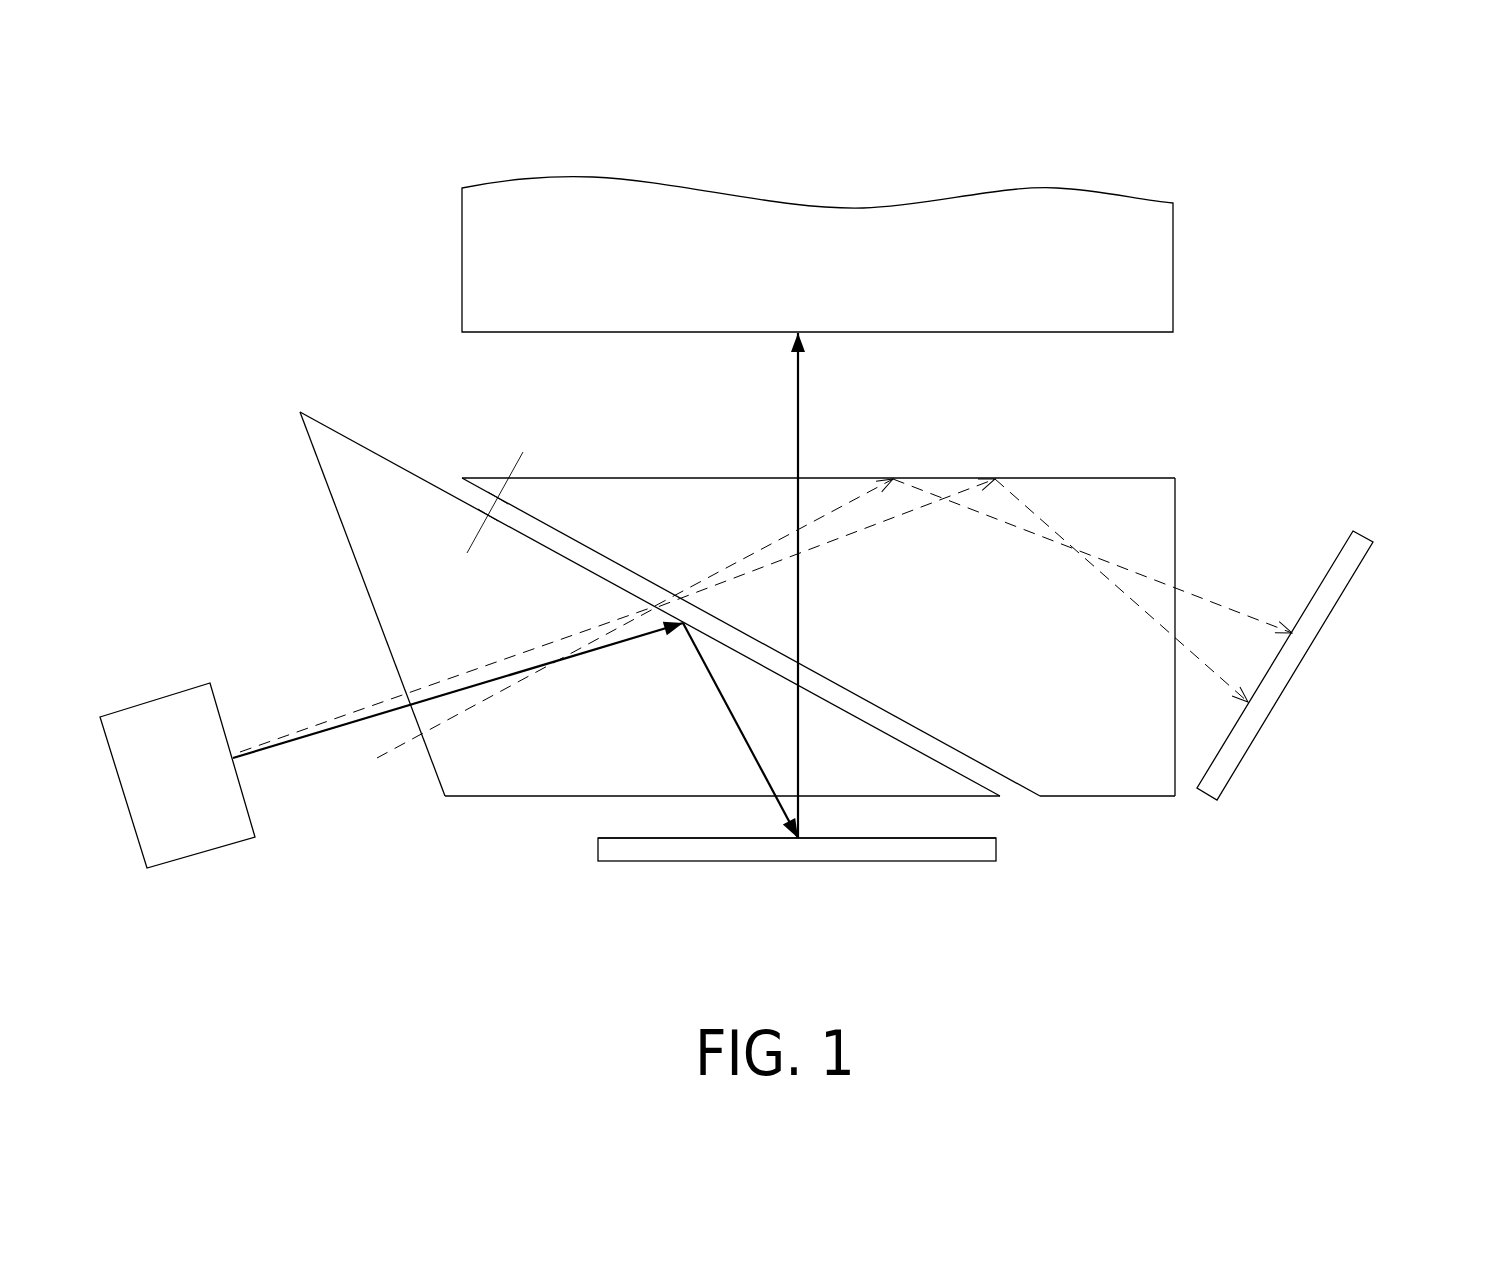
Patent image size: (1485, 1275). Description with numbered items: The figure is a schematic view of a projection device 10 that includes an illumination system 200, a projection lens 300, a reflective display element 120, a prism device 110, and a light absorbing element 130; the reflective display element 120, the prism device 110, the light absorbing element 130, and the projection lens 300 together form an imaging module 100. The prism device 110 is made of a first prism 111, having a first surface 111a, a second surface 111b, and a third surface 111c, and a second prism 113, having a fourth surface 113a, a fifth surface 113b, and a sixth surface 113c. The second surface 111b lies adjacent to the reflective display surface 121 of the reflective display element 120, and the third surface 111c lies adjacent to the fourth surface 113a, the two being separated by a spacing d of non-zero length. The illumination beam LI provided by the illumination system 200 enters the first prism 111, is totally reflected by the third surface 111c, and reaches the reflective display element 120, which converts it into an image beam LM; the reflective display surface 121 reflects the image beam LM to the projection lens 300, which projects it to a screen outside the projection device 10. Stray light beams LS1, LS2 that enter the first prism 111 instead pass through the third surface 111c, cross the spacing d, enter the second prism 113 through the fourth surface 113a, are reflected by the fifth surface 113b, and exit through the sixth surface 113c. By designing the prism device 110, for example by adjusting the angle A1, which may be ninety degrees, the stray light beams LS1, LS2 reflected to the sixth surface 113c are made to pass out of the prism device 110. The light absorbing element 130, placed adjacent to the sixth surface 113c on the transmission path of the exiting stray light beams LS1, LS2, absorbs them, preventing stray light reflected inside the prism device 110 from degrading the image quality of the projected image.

The projection device 10 is at (260, 268).
The imaging module 100 is at (804, 651).
The prism device 110 is at (657, 643).
The first prism 111 is at (570, 632).
The first surface 111a is at (318, 462).
The second surface 111b is at (557, 800).
The third surface 111c is at (400, 468).
The second prism 113 is at (818, 665).
The fourth surface 113a is at (877, 712).
The fifth surface 113b is at (690, 483).
The sixth surface 113c is at (1172, 752).
The reflective display element 120 is at (797, 906).
The reflective display surface 121 is at (908, 837).
The light absorbing element 130 is at (1332, 590).
The illumination system 200 is at (158, 728).
The projection lens 300 is at (1147, 262).
The angle A1 is at (1172, 490).
The spacing d is at (493, 507).
The illumination beam LI is at (275, 760).
The image beam LM is at (800, 408).
The stray light beam LS1 is at (380, 762).
The stray light beam LS2 is at (335, 718).